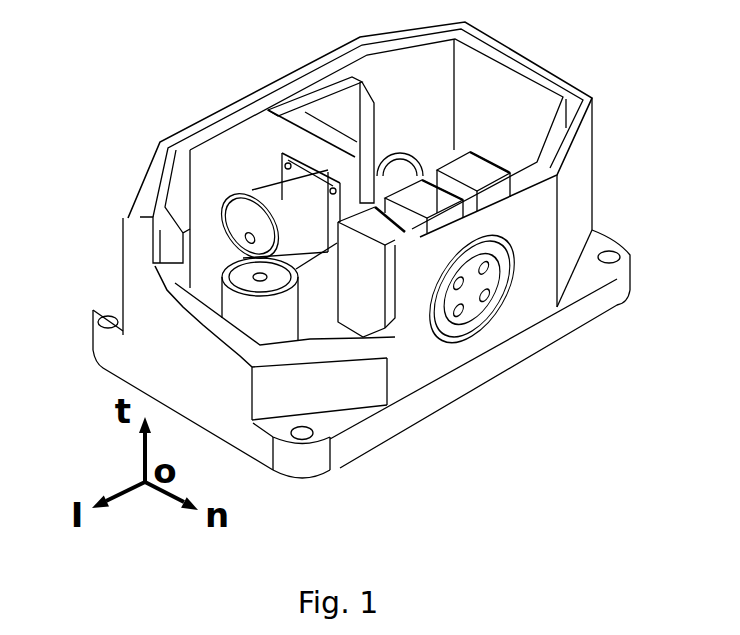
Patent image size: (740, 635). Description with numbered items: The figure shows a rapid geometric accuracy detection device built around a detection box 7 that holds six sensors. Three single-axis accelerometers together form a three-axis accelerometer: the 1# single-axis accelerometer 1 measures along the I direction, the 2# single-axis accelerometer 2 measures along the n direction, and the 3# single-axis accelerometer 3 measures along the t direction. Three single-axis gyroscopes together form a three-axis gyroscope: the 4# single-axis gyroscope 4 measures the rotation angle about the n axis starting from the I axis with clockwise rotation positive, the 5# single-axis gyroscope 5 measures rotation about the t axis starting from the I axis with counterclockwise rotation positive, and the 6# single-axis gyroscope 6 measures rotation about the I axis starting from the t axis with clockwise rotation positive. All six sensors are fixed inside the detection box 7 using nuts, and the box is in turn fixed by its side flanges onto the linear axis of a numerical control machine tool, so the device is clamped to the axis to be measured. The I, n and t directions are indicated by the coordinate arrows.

The 1# single-axis accelerometer 1 is at (285, 193).
The 2# single-axis accelerometer 2 is at (373, 157).
The 3# single-axis accelerometer 3 is at (283, 318).
The 4# single-axis gyroscope 4 is at (390, 237).
The 5# single-axis gyroscope 5 is at (437, 205).
The 6# single-axis gyroscope 6 is at (490, 182).
The detection box 7 is at (158, 295).